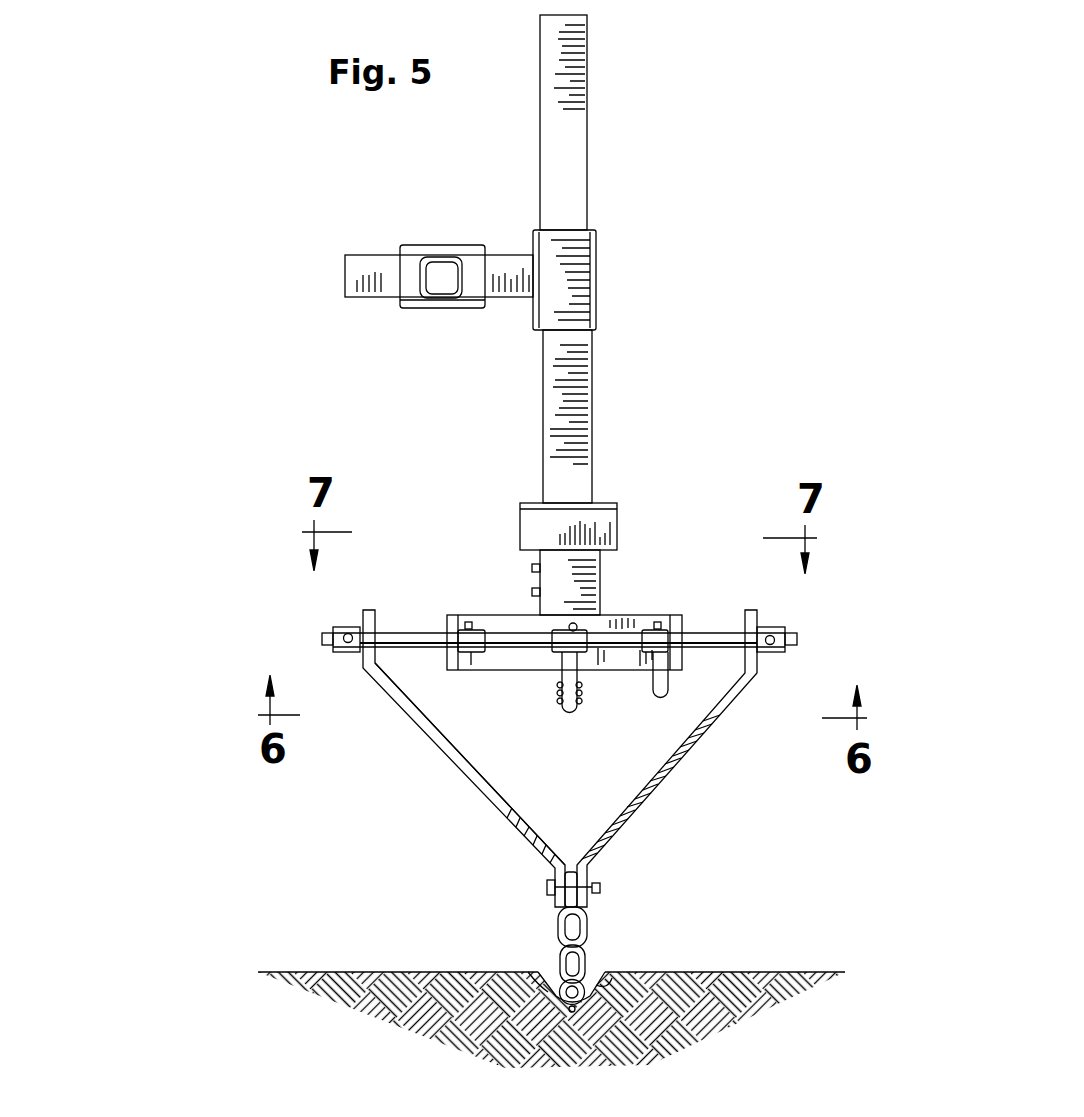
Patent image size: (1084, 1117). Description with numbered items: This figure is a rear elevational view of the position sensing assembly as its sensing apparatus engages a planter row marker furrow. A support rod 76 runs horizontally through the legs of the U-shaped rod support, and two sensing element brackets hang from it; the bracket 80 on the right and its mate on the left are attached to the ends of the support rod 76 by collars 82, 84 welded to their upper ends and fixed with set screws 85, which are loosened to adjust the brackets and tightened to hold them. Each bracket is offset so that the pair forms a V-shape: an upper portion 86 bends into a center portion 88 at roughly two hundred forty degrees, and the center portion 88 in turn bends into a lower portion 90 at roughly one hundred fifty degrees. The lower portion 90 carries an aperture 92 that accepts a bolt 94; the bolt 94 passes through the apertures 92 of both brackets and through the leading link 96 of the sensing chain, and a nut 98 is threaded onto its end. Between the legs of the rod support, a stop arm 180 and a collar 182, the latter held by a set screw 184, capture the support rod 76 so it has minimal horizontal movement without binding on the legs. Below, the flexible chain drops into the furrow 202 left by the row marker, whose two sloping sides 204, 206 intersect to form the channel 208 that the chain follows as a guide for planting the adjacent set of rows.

The support rod 76 is at (702, 635).
The sensing element bracket 80 is at (668, 768).
The collar 82 is at (345, 657).
The collar 84 is at (773, 653).
The set screw 85 is at (352, 633).
The upper portion 86 is at (368, 662).
The center portion 88 is at (440, 747).
The lower portion 90 is at (555, 870).
The aperture 92 is at (553, 907).
The bolt 94 is at (547, 887).
The leading link 96 is at (593, 905).
The nut 98 is at (595, 875).
The stop arm 180 is at (663, 683).
The collar 182 is at (468, 650).
The set screw 184 is at (470, 623).
The furrow 202 is at (608, 948).
The sloping side 204 is at (543, 992).
The sloping side 206 is at (607, 982).
The channel 208 is at (551, 1027).